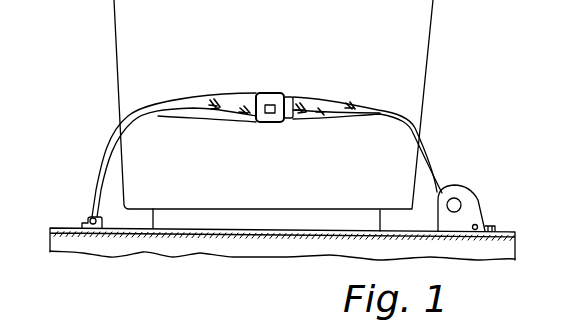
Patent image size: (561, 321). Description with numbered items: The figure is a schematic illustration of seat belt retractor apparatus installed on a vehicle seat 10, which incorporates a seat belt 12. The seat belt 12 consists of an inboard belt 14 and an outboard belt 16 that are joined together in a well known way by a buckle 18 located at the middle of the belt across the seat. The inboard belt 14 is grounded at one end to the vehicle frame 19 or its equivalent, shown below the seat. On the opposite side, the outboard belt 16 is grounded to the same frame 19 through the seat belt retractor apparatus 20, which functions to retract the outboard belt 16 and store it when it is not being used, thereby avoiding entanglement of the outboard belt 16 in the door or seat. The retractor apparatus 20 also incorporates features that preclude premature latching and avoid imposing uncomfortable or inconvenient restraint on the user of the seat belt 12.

The vehicle seat 10 is at (432, 53).
The seat belt 12 is at (192, 95).
The inboard belt 14 is at (98, 174).
The outboard belt 16 is at (432, 157).
The buckle 18 is at (270, 93).
The vehicle frame 19 is at (192, 234).
The seat belt retractor apparatus 20 is at (481, 199).